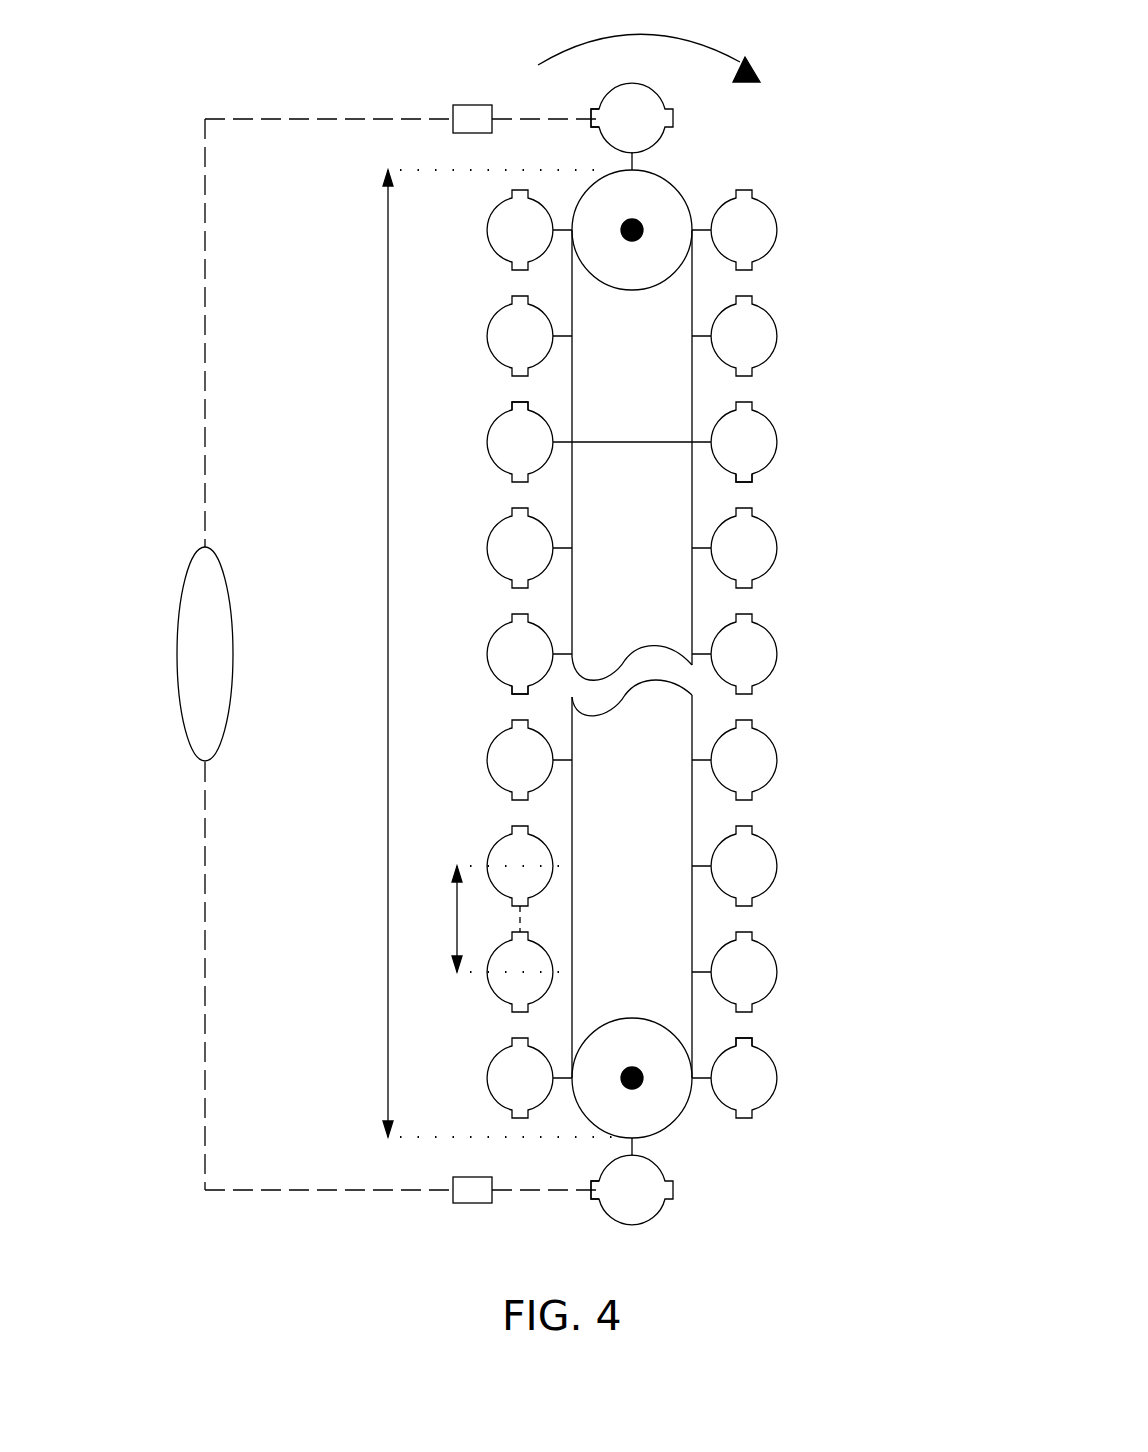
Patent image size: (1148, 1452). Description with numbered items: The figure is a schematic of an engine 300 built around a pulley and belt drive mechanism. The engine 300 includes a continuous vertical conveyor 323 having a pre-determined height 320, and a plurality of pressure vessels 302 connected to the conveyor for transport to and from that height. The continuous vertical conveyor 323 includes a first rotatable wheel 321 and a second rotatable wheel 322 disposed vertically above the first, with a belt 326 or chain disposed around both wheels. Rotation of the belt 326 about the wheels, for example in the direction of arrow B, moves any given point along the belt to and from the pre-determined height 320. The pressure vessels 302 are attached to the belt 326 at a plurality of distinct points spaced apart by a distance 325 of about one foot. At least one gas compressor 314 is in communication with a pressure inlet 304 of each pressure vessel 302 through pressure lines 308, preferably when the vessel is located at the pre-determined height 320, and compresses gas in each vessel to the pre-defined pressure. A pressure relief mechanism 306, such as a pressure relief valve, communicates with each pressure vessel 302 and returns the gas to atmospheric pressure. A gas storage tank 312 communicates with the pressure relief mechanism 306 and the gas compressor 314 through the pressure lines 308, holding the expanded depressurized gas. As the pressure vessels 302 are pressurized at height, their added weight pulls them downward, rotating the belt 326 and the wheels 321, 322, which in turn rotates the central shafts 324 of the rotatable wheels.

The engine 300 is at (192, 66).
The pressure vessels 302 is at (643, 105).
The pressure inlet 304 is at (598, 118).
The pressure relief mechanism 306 is at (519, 408).
The pressure lines 308 is at (205, 330).
The gas storage tank 312 is at (192, 655).
The gas compressor 314 is at (472, 105).
The pre-determined height 320 is at (388, 500).
The first rotatable wheel 321 is at (660, 1112).
The second rotatable wheel 322 is at (660, 214).
The continuous vertical conveyor 323 is at (663, 168).
The central shafts 324 is at (638, 242).
The distance 325 is at (457, 920).
The belt 326 is at (692, 383).